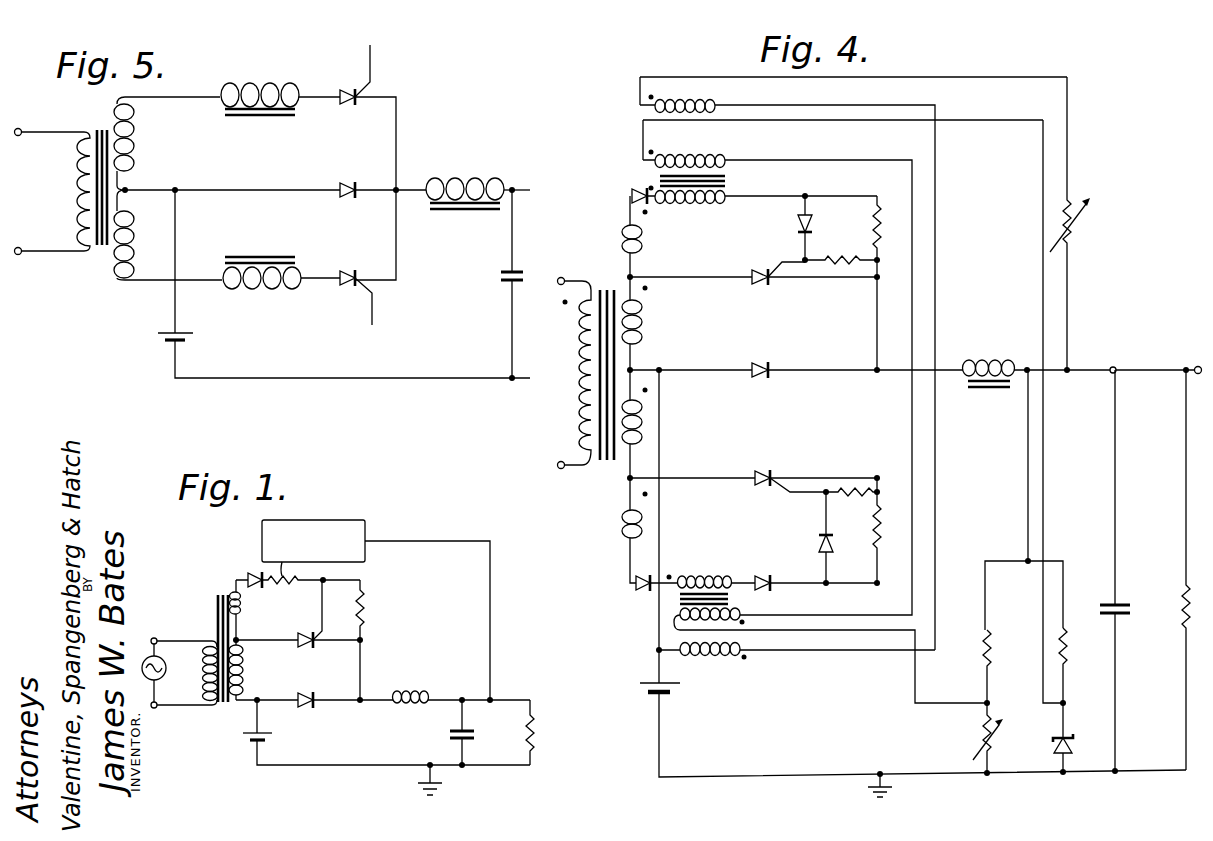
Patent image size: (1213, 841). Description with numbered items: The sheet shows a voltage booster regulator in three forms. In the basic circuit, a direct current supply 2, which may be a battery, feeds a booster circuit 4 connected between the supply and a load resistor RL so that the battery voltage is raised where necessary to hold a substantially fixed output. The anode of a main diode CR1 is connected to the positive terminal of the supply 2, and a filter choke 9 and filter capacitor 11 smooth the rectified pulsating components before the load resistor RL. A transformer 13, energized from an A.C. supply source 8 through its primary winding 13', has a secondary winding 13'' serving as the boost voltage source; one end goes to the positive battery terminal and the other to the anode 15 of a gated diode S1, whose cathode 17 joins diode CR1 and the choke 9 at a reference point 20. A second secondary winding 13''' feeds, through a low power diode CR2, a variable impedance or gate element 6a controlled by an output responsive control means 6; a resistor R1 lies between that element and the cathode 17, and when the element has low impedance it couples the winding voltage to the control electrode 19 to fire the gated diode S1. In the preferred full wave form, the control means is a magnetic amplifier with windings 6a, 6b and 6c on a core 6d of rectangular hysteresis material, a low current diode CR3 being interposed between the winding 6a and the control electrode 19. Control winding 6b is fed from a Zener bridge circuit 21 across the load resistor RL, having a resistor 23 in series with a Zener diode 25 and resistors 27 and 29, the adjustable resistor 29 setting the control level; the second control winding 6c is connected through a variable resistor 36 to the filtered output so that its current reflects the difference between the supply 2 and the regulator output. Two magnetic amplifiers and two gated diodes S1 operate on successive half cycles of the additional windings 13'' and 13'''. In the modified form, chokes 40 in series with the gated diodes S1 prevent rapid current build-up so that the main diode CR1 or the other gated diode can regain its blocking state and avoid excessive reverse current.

In FIG. 5, the direct current supply 2 is at (160, 339).
In FIG. 1, the direct current supply 2 is at (242, 736).
In FIG. 4, the direct current supply 2 is at (640, 686).
In FIG. 1, the booster circuit 4 is at (232, 707).
In FIG. 1, the output responsive control means 6 is at (321, 520).
In FIG. 4, the output responsive control means 6 is at (641, 157).
In FIG. 1, the variable impedance or gate element 6a is at (284, 581).
In FIG. 4, the variable impedance or gate element 6a is at (702, 205).
In FIG. 4, the control winding 6b is at (708, 162).
In FIG. 4, the second control winding 6c is at (687, 107).
In FIG. 4, the core 6d is at (728, 183).
In FIG. 1, the A.C. supply source 8 is at (145, 661).
In FIG. 5, the filter choke 9 is at (468, 177).
In FIG. 1, the filter choke 9 is at (424, 688).
In FIG. 4, the filter choke 9 is at (988, 360).
In FIG. 5, the filter capacitor 11 is at (503, 282).
In FIG. 1, the filter capacitor 11 is at (450, 737).
In FIG. 4, the filter capacitor 11 is at (1134, 605).
In FIG. 5, the transformer 13 is at (79, 176).
In FIG. 4, the transformer 13 is at (591, 349).
In FIG. 5, the primary winding 13' is at (53, 192).
In FIG. 1, the primary winding 13' is at (186, 689).
In FIG. 4, the primary winding 13' is at (557, 373).
In FIG. 5, the secondary winding 13'' is at (227, 188).
In FIG. 1, the secondary winding 13'' is at (255, 670).
In FIG. 4, the secondary winding 13'' is at (663, 377).
In FIG. 1, the second secondary winding 13''' is at (210, 610).
In FIG. 4, the second secondary winding 13''' is at (627, 389).
In FIG. 1, the anode 15 is at (296, 638).
In FIG. 4, the anode 15 is at (745, 273).
In FIG. 1, the cathode 17 is at (317, 639).
In FIG. 4, the cathode 17 is at (773, 281).
In FIG. 1, the control electrode 19 is at (320, 630).
In FIG. 4, the control electrode 19 is at (780, 261).
In FIG. 1, the reference point 20 is at (361, 700).
In FIG. 4, the reference point 20 is at (874, 368).
In FIG. 4, the Zener bridge circuit 21 is at (1028, 608).
In FIG. 4, the resistor 23 is at (1066, 630).
In FIG. 4, the Zener diode 25 is at (1068, 738).
In FIG. 4, the resistor 27 is at (980, 638).
In FIG. 4, the adjustable resistor 29 is at (976, 732).
In FIG. 4, the variable resistor 36 is at (1083, 245).
In FIG. 5, the choke 40 is at (258, 84).
In FIG. 5, the main diode CR1 is at (347, 185).
In FIG. 1, the main diode CR1 is at (310, 692).
In FIG. 4, the main diode CR1 is at (771, 379).
In FIG. 1, the low power diode CR2 is at (248, 577).
In FIG. 4, the low power diode CR2 is at (630, 190).
In FIG. 4, the low current capacity diode CR3 is at (812, 238).
In FIG. 1, the resistor R1 is at (359, 605).
In FIG. 4, the resistor R1 is at (878, 221).
In FIG. 1, the load resistor RL is at (534, 744).
In FIG. 4, the load resistor RL is at (1182, 630).
In FIG. 5, the gated diode S1 is at (353, 103).
In FIG. 1, the gated diode S1 is at (279, 612).
In FIG. 4, the gated diode S1 is at (759, 282).